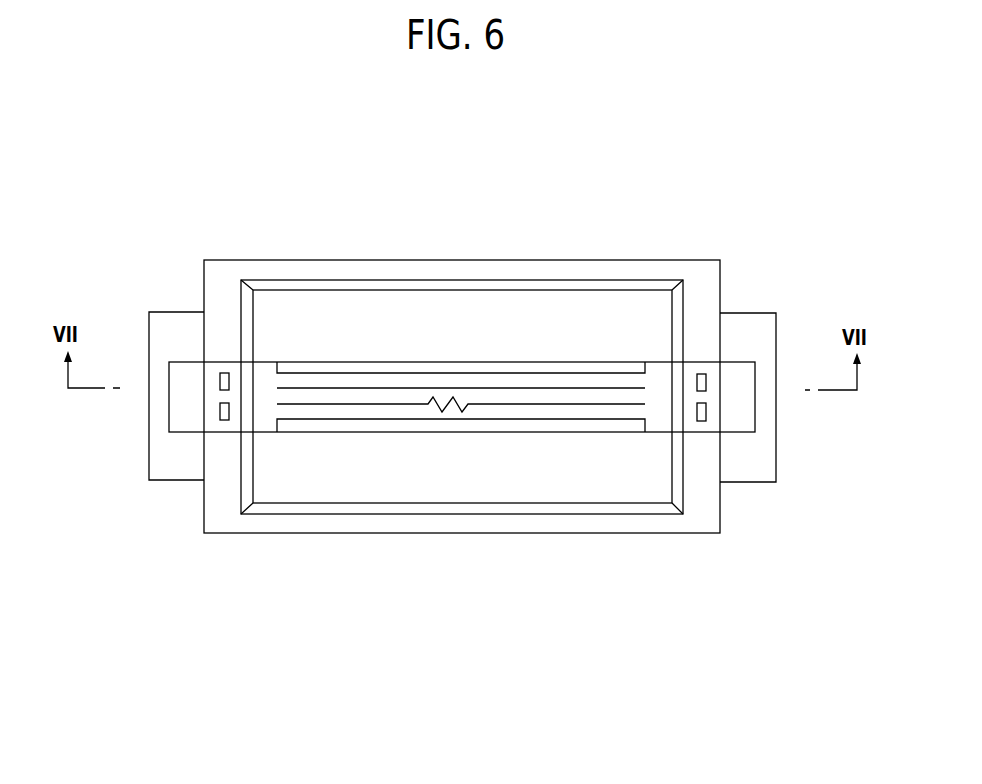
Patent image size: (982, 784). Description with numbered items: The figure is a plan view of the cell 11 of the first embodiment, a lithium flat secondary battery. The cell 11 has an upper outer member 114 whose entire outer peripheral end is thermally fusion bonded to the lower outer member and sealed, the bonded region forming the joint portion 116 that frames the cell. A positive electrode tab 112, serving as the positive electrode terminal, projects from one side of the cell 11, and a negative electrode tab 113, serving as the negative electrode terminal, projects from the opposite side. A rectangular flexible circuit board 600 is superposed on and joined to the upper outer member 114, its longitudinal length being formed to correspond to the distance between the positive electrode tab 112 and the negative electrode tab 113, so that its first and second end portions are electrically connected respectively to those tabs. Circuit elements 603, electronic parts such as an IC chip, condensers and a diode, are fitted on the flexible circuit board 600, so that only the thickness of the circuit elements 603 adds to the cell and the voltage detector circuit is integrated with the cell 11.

The cell 11 is at (762, 224).
The positive electrode tab 112 is at (762, 468).
The negative electrode tab 113 is at (168, 481).
The upper outer member 114 is at (530, 492).
The joint portion 116 is at (222, 290).
The flexible circuit board 600 is at (631, 448).
The circuit elements 603 is at (220, 381).